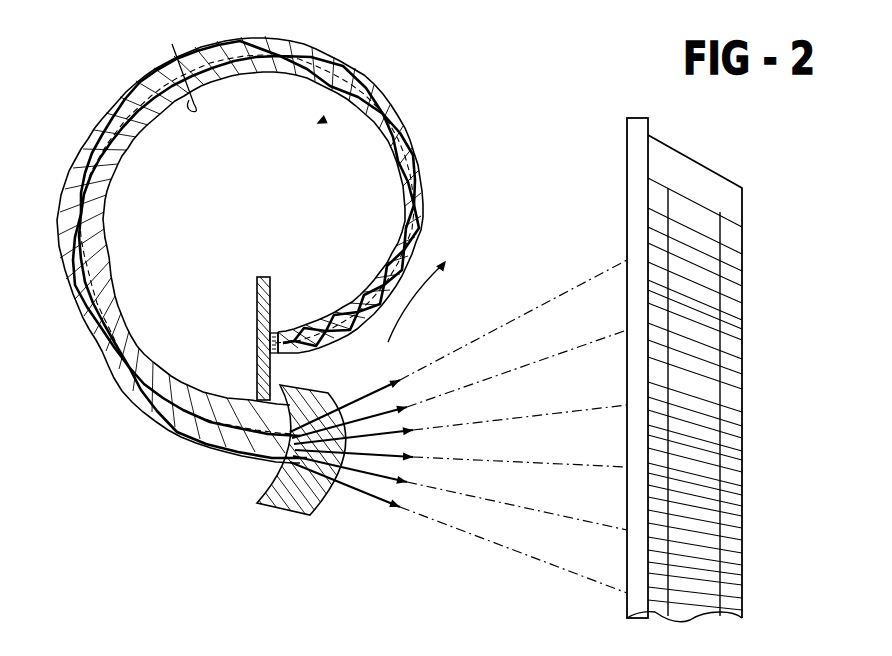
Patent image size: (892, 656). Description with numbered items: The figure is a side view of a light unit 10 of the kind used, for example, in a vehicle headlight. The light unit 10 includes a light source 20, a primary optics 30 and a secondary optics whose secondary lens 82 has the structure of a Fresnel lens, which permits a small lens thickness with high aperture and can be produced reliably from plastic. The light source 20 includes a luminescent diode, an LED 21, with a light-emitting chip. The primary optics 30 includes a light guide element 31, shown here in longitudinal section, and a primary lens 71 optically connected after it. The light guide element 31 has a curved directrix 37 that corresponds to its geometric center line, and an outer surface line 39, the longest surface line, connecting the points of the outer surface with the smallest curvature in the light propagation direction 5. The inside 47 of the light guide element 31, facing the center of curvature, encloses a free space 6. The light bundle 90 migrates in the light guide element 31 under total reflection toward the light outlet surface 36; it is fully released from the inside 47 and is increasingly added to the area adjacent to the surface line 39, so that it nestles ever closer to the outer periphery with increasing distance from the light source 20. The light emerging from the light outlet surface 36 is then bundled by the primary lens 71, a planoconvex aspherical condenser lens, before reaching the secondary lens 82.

The light unit 10 is at (106, 100).
The primary optics 30 is at (141, 66).
The inside 47 is at (174, 66).
The light guide element 31 is at (276, 40).
The surface line 39 is at (339, 60).
The free space 6 is at (322, 121).
The directrix 37 is at (76, 144).
The LED 21 is at (265, 343).
The light source 20 is at (255, 358).
The light propagation direction 5 is at (420, 312).
The light bundle 90 is at (352, 334).
The light outlet surface 36 is at (293, 428).
The primary lens 71 is at (333, 501).
The secondary lens 82 is at (688, 198).